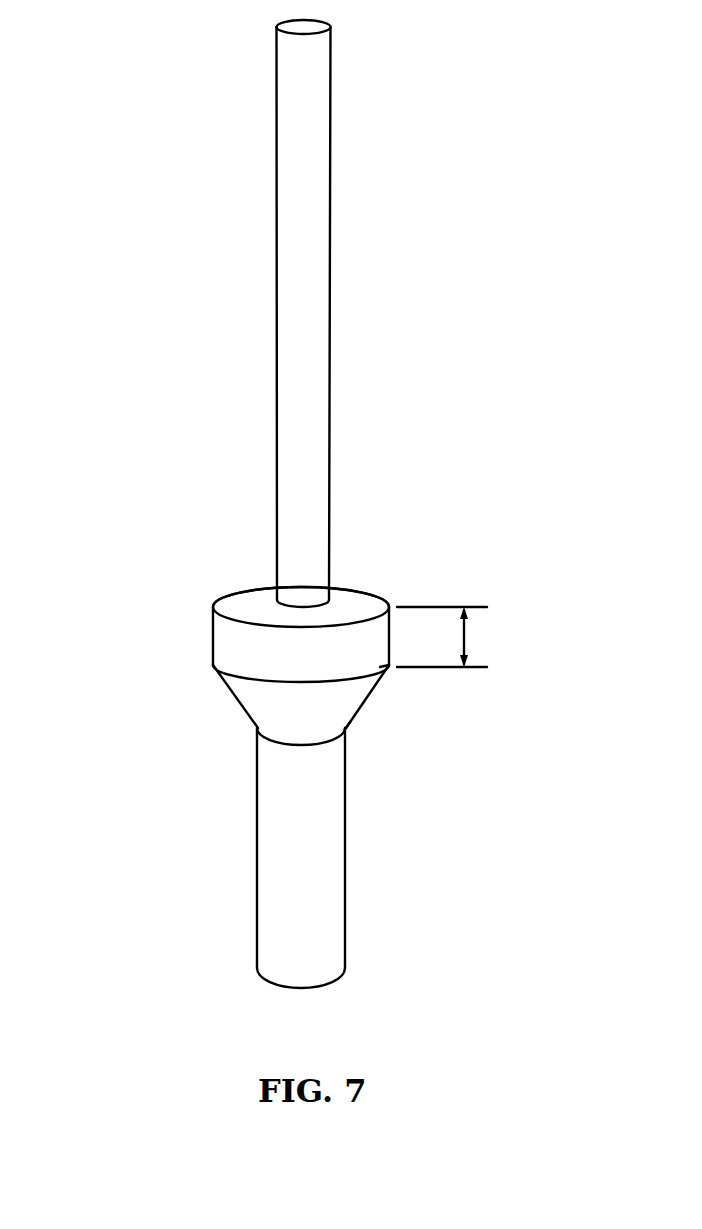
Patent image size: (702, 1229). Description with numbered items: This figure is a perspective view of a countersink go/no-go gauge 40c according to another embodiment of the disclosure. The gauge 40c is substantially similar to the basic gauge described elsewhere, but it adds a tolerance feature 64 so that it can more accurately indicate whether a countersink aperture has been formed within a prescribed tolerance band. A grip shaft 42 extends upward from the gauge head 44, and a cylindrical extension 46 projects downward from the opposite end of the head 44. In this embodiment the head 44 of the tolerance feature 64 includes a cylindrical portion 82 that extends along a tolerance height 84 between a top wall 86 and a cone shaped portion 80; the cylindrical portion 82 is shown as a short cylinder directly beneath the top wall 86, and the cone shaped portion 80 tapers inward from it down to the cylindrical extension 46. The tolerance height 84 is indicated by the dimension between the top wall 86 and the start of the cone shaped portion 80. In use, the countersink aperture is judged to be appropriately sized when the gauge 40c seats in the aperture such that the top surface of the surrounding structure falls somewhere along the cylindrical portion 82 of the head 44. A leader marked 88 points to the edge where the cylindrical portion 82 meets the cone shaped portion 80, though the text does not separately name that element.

The countersink go/no-go gauge 40c is at (186, 334).
The grip shaft 42 is at (308, 200).
The gauge head 44 is at (235, 698).
The cylindrical extension 46 is at (313, 910).
The tolerance feature 64 is at (170, 679).
The cone shaped portion 80 is at (353, 720).
The cylindrical portion 82 is at (210, 638).
The tolerance height 84 is at (466, 635).
The top wall 86 is at (348, 605).
The edge 88 is at (390, 672).